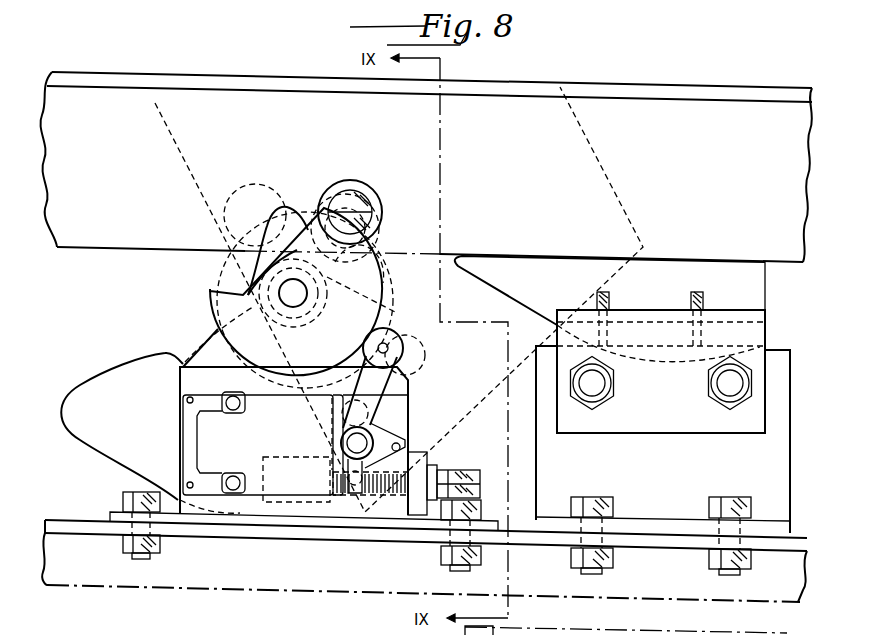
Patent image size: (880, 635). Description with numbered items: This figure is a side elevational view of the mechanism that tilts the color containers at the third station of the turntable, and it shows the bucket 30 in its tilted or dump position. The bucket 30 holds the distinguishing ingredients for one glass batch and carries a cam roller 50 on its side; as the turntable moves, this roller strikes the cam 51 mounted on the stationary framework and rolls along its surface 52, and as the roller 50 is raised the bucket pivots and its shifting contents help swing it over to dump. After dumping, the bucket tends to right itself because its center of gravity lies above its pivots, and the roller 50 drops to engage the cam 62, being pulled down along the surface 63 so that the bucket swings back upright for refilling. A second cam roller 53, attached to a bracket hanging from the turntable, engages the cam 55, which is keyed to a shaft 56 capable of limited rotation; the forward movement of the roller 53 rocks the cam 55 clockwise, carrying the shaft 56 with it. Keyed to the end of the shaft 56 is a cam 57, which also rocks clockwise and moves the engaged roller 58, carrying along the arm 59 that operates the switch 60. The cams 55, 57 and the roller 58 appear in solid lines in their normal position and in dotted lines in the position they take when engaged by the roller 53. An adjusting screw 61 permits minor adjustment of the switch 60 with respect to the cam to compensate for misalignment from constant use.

The bucket 30 is at (573, 133).
The cam roller 50 is at (263, 193).
The cam 51 is at (140, 382).
The cam surface 52 is at (163, 360).
The second cam roller 53 is at (375, 211).
The cam 55 is at (290, 218).
The shaft 56 is at (297, 303).
The cam 57 is at (377, 281).
The roller 58 is at (393, 343).
The arm 59 is at (408, 395).
The switch 60 is at (297, 488).
The adjusting screw 61 is at (387, 498).
The cam 62 is at (558, 268).
The surface 63 is at (538, 315).